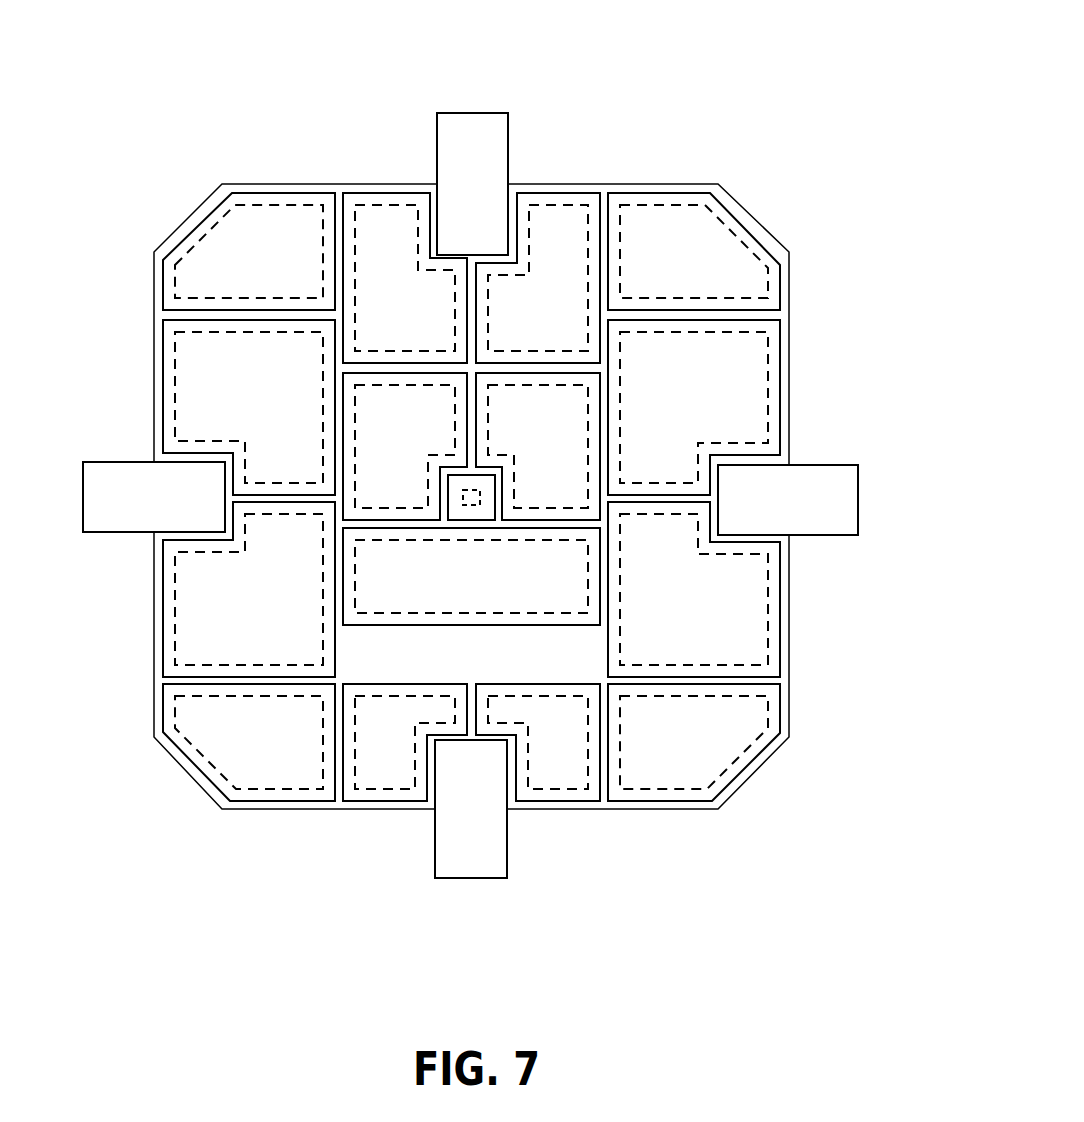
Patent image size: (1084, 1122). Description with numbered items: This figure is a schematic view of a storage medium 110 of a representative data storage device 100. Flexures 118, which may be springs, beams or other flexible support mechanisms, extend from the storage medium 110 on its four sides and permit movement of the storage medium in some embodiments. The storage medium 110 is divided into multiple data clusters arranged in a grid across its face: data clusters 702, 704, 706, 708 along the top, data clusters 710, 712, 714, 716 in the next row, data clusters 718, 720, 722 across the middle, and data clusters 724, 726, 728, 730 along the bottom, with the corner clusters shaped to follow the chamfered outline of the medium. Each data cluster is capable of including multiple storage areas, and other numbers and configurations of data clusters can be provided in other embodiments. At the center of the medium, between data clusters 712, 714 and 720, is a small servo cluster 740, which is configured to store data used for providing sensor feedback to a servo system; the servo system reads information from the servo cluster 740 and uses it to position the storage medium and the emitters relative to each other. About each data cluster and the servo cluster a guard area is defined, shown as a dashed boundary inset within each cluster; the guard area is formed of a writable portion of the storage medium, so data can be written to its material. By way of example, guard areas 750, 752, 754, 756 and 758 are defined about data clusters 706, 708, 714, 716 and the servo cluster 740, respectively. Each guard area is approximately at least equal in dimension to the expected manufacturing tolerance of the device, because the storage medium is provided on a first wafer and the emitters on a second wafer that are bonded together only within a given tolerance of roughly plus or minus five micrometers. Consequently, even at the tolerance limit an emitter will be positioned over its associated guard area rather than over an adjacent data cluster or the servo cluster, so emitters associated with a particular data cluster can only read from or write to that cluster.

The data storage device 100 is at (841, 82).
The storage medium 110 is at (812, 195).
The flexures 118 is at (472, 112).
The data cluster 702 is at (235, 266).
The data cluster 704 is at (385, 327).
The data cluster 706 is at (519, 327).
The data cluster 708 is at (659, 266).
The data cluster 710 is at (235, 404).
The data cluster 712 is at (385, 439).
The data cluster 714 is at (519, 439).
The data cluster 716 is at (661, 404).
The data cluster 718 is at (235, 614).
The data cluster 720 is at (378, 589).
The data cluster 722 is at (663, 617).
The data cluster 724 is at (235, 752).
The data cluster 726 is at (385, 702).
The data cluster 728 is at (519, 702).
The data cluster 730 is at (661, 754).
The servo cluster 740 is at (472, 507).
The guard area 750 is at (542, 200).
The guard area 752 is at (683, 200).
The guard area 754 is at (593, 383).
The guard area 756 is at (772, 332).
The guard area 758 is at (494, 497).